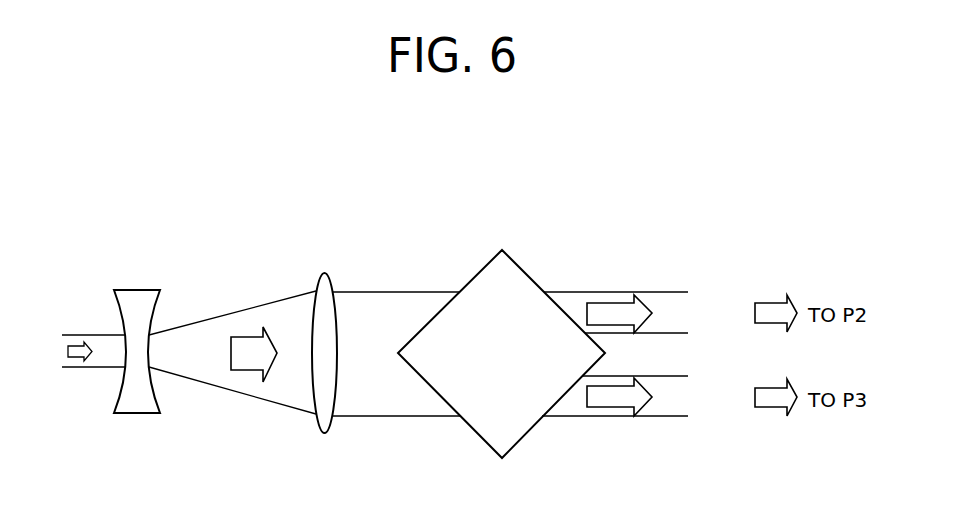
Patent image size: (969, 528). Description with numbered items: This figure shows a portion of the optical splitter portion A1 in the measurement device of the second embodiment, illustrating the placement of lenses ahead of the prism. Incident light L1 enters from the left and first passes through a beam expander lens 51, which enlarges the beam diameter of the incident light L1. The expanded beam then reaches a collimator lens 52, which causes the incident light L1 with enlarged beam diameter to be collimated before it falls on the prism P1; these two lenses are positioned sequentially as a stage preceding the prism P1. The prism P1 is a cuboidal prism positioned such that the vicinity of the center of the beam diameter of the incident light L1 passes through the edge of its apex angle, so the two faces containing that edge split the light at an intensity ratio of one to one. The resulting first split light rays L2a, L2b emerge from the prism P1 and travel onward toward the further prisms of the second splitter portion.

The optical splitter portion A1 is at (563, 190).
The beam expander lens 51 is at (138, 290).
The collimator lens 52 is at (325, 273).
The prism P1 is at (502, 250).
The incident light L1 is at (73, 370).
The first split light ray L2a is at (595, 292).
The first split light ray L2b is at (592, 417).